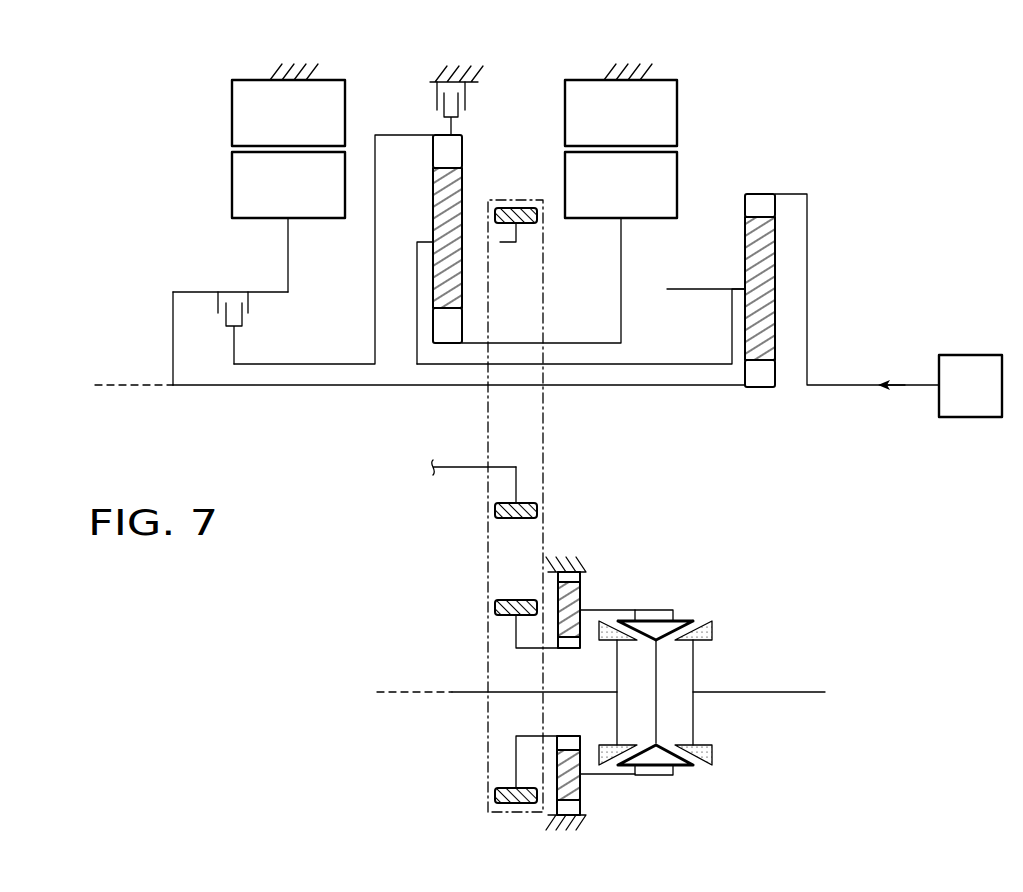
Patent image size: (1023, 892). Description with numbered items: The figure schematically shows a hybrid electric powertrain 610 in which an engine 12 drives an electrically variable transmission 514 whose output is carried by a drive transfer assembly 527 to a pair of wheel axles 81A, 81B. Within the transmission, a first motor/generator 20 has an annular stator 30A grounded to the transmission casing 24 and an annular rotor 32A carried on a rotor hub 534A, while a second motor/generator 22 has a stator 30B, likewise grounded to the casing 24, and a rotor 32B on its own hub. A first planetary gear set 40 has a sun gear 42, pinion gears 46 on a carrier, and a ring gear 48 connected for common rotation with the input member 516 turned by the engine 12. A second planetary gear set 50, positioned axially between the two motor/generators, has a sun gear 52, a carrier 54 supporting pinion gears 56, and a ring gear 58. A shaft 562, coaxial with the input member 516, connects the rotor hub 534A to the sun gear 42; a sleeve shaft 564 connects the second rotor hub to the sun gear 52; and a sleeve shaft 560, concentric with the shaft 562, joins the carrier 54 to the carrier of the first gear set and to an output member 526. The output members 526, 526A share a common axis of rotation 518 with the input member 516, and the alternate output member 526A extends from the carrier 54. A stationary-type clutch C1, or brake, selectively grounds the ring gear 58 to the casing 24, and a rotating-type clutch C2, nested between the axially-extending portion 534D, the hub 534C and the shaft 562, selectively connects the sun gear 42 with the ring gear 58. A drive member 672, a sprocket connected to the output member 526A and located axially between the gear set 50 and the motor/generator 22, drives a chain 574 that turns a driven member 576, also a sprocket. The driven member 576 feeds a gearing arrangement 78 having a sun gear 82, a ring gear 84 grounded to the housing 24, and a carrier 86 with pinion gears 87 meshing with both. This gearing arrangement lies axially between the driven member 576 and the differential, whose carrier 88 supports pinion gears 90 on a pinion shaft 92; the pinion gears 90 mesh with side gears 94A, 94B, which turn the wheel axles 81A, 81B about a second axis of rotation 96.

The engine 12 is at (970, 386).
The first motor/generator 20 is at (255, 149).
The second motor/generator 22 is at (647, 159).
The transmission casing 24 is at (280, 73).
The annular stator 30A is at (288, 113).
The annular stator 30B is at (621, 113).
The annular rotor 32A is at (288, 185).
The annular rotor 32B is at (691, 167).
The first planetary gear set 40 is at (787, 319).
The sun gear 42 is at (758, 387).
The pinion gears 46 is at (776, 288).
The ring gear 48 is at (758, 194).
The second planetary gear set 50 is at (405, 293).
The sun gear 52 is at (462, 326).
The carrier 54 is at (433, 240).
The pinion gears 56 is at (462, 212).
The ring gear 58 is at (462, 153).
The gearing arrangement 78 is at (601, 793).
The wheel axle 81A is at (468, 692).
The wheel axle 81B is at (750, 692).
The sun gear 82 is at (565, 736).
The ring gear 84 is at (558, 808).
The carrier 86 is at (603, 776).
The pinion gears 87 is at (583, 765).
The carrier 88 is at (656, 610).
The pinion gears 90 is at (682, 768).
The pinion shaft 92 is at (657, 693).
The side gear 94A is at (600, 630).
The side gear 94B is at (715, 758).
The second axis of rotation 96 is at (430, 692).
The electrically variable transmission 514 is at (765, 278).
The input member 516 is at (822, 382).
The common axis of rotation 518 is at (113, 385).
The output member 526 is at (710, 290).
The alternate output member 526A is at (500, 242).
The drive transfer assembly 527 is at (733, 504).
The rotor hub 534A is at (286, 283).
The hub 534C is at (173, 338).
The axially-extending portion 534D is at (195, 292).
The sleeve shaft 560 is at (630, 366).
The shaft 562 is at (711, 387).
The sleeve shaft 564 is at (533, 343).
The chain 574 is at (488, 437).
The driven member 576 is at (505, 600).
The powertrain 610 is at (821, 92).
The drive member 672 is at (516, 207).
The stationary-type clutch C1 is at (485, 82).
The rotating-type clutch C2 is at (256, 329).